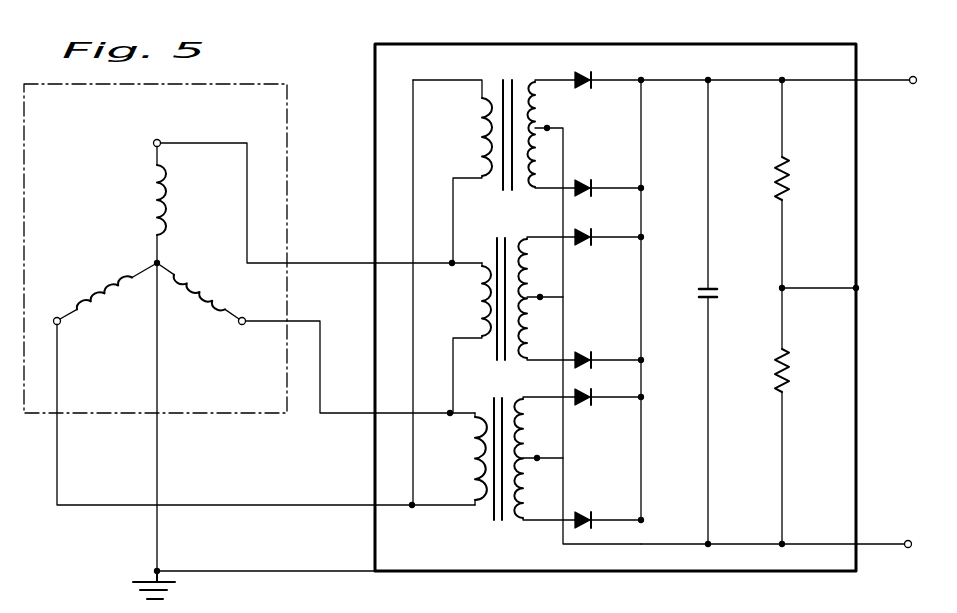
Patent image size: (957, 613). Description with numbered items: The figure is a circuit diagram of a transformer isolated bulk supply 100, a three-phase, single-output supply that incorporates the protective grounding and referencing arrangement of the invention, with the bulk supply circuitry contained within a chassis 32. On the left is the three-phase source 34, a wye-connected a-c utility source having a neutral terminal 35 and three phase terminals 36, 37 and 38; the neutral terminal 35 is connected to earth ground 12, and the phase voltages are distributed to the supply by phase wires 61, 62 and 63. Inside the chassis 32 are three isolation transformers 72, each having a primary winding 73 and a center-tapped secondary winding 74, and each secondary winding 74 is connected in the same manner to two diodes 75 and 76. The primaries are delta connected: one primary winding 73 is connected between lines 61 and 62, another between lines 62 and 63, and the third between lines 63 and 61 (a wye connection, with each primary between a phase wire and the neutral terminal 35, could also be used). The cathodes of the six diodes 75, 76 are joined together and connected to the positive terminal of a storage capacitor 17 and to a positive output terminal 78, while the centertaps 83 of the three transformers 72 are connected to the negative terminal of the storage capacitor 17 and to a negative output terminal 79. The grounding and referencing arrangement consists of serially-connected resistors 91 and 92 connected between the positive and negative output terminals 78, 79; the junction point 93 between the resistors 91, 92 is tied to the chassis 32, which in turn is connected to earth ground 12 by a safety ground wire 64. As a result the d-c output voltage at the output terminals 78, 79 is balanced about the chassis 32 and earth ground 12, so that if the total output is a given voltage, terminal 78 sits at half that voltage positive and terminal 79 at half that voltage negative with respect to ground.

The earth ground 12 is at (150, 573).
The storage capacitor 17 is at (706, 288).
The chassis 32 is at (738, 44).
The three-phase source 34 is at (78, 125).
The neutral terminal 35 is at (160, 262).
The phase terminal 36 is at (160, 141).
The phase terminal 37 is at (243, 326).
The phase terminal 38 is at (60, 325).
The phase wire 61 is at (340, 250).
The phase wire 62 is at (322, 300).
The phase wire 63 is at (346, 482).
The safety ground wire 64 is at (340, 556).
The isolation transformer 72 is at (501, 90).
The primary winding 73 is at (482, 135).
The center-tapped secondary winding 74 is at (529, 85).
The diode 75 is at (592, 90).
The diode 76 is at (592, 184).
The positive output terminal 78 is at (913, 76).
The negative output terminal 79 is at (910, 541).
The centertap 83 is at (547, 127).
The resistor 91 is at (790, 172).
The resistor 92 is at (790, 370).
The junction point 93 is at (788, 286).
The transformer isolated bulk supply 100 is at (828, 34).